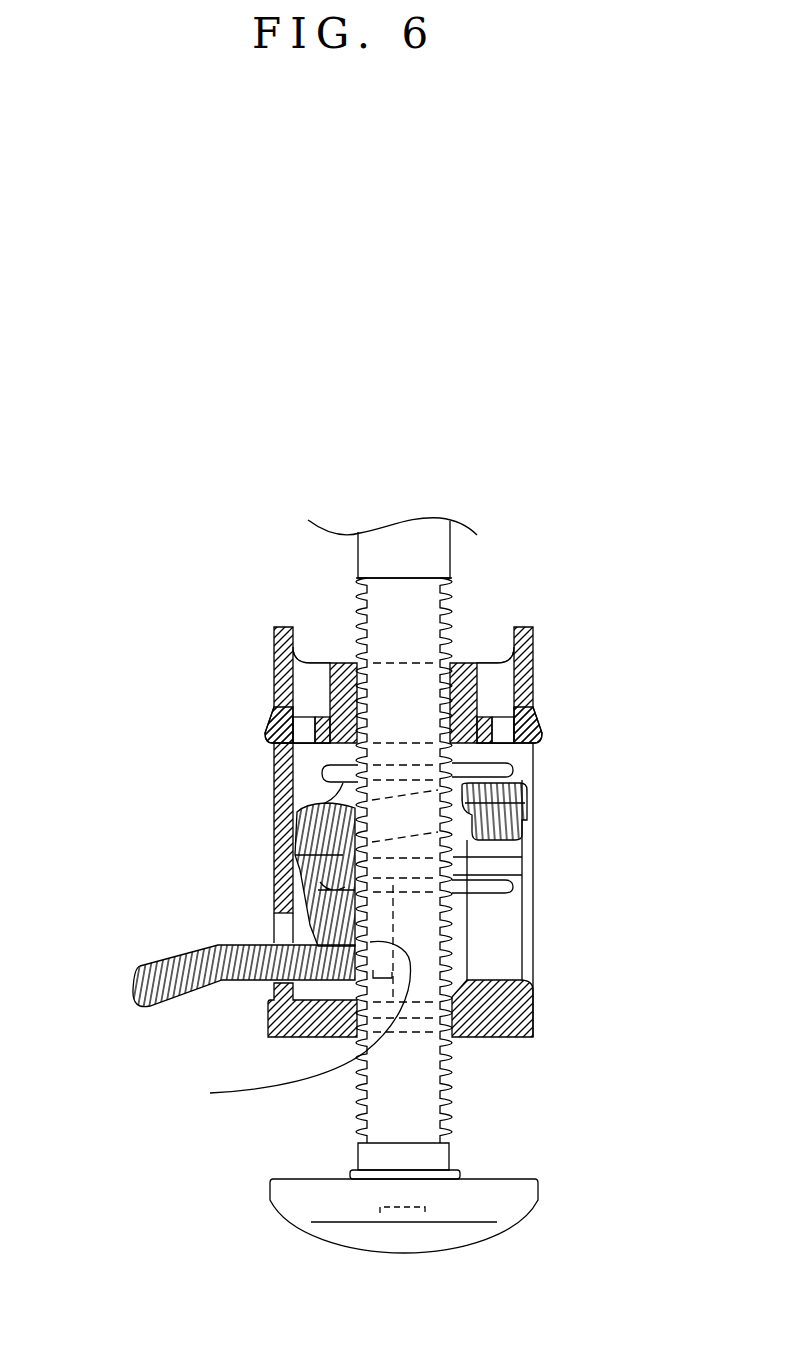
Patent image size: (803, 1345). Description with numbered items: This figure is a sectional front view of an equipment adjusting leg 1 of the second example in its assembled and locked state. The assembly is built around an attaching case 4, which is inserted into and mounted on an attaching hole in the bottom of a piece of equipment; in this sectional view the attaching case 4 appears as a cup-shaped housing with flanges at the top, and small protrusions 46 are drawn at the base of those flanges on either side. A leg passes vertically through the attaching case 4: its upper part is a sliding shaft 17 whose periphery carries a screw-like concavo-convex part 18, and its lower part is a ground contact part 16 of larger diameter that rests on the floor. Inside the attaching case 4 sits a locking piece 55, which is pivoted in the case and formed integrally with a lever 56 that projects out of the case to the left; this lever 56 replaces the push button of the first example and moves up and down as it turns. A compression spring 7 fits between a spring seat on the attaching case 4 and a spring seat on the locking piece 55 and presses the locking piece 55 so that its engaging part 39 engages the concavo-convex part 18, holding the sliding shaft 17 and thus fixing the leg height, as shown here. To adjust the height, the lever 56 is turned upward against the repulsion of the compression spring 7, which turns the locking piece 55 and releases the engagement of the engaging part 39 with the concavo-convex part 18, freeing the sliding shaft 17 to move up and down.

The equipment adjusting leg 1 is at (92, 590).
The attaching case 4 is at (586, 660).
The compression spring 7 is at (523, 843).
The ground contact part 16 is at (225, 1226).
The sliding shaft 17 is at (259, 1156).
The concavo-convex part 18 is at (453, 607).
The engaging part 39 is at (262, 1033).
The flared foot 46 is at (263, 733).
The locking piece 55 is at (270, 930).
The lever 56 is at (183, 953).